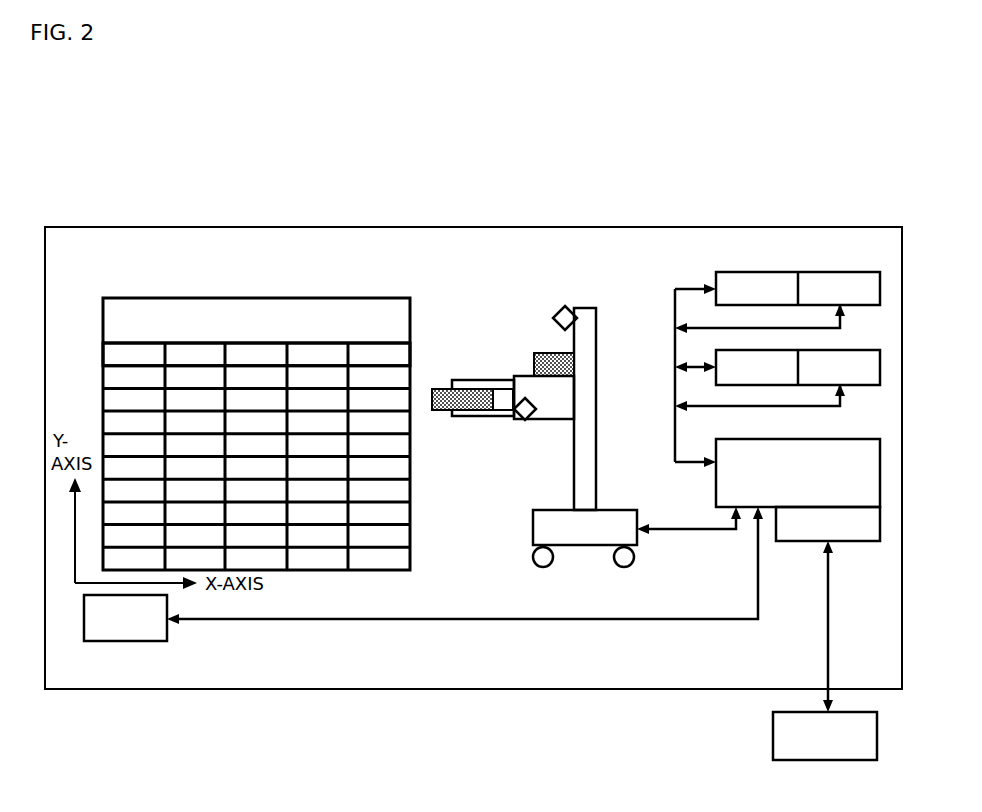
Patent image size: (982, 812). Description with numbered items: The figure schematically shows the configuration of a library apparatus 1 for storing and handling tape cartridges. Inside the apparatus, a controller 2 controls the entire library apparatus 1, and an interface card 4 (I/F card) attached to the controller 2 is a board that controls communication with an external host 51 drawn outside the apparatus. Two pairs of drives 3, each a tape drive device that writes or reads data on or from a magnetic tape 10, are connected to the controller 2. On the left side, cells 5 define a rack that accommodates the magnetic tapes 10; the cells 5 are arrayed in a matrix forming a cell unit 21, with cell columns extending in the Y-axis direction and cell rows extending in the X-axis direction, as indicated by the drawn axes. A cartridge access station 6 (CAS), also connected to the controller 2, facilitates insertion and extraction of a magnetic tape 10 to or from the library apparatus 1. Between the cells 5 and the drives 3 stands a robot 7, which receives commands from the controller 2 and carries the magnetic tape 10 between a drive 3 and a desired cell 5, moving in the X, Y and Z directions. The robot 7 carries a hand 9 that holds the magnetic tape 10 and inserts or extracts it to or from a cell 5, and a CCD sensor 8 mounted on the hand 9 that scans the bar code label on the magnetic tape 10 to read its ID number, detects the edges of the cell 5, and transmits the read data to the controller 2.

The library apparatus 1 is at (709, 226).
The controller 2 is at (846, 437).
The drive 3 is at (846, 270).
The interface card 4 is at (848, 542).
The cells 5 is at (386, 530).
The cartridge access station 6 is at (140, 641).
The robot 7 is at (612, 508).
The CCD sensor 8 is at (552, 352).
The hand 9 is at (554, 413).
The magnetic tape 10 is at (468, 392).
The cell unit 21 is at (320, 343).
The host 51 is at (773, 735).